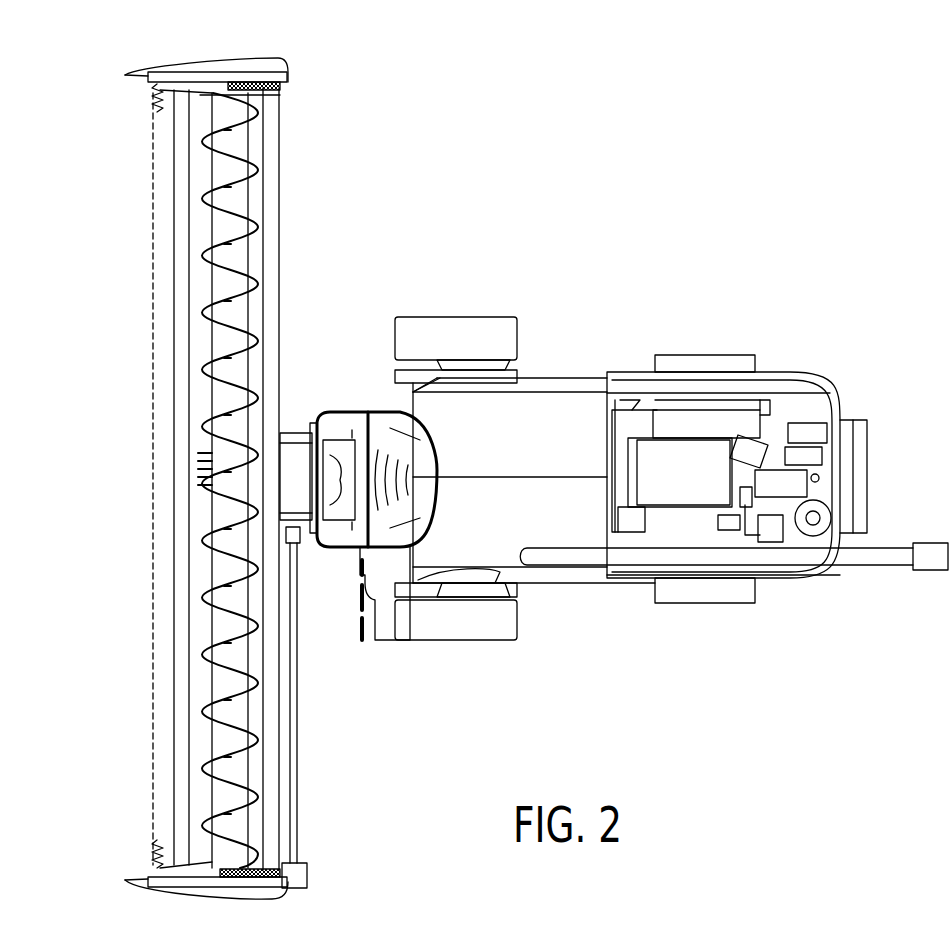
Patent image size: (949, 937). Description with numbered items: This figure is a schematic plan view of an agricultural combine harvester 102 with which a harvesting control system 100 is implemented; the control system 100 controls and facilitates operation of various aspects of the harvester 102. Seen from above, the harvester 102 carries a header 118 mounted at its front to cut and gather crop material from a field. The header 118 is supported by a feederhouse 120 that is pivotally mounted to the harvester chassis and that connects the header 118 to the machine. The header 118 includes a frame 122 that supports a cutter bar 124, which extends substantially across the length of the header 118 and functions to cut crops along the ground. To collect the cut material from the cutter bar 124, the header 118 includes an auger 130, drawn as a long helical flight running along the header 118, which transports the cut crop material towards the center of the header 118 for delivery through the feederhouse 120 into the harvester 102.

The harvesting control system 100 is at (397, 113).
The agricultural combine harvester 102 is at (462, 285).
The header 118 is at (308, 170).
The feederhouse 120 is at (302, 410).
The frame 122 is at (280, 268).
The cutter bar 124 is at (153, 90).
The auger 130 is at (228, 93).